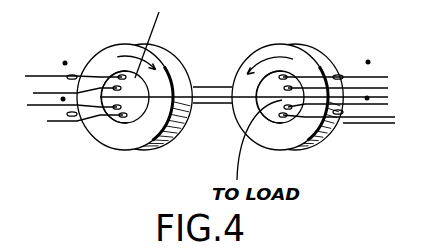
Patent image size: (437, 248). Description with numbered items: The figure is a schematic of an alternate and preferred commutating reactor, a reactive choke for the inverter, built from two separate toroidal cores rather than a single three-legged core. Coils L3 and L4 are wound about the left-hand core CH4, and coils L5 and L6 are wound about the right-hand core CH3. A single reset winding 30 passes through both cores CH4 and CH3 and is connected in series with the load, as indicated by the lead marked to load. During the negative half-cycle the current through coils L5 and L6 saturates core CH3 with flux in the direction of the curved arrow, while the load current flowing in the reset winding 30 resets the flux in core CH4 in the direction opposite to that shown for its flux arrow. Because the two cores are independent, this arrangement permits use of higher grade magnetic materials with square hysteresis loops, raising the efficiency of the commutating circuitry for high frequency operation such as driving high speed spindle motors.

The reset winding 30 is at (155, 23).
The core CH3 is at (297, 138).
The magnetic core CH4 is at (120, 139).
The coil L3 is at (45, 86).
The coil L4 is at (52, 115).
The coil L5 is at (373, 83).
The coil L6 is at (375, 112).